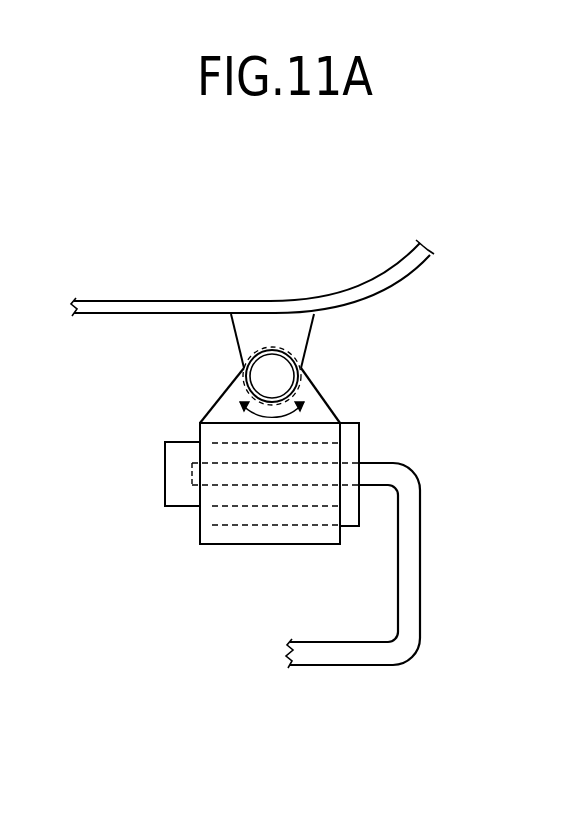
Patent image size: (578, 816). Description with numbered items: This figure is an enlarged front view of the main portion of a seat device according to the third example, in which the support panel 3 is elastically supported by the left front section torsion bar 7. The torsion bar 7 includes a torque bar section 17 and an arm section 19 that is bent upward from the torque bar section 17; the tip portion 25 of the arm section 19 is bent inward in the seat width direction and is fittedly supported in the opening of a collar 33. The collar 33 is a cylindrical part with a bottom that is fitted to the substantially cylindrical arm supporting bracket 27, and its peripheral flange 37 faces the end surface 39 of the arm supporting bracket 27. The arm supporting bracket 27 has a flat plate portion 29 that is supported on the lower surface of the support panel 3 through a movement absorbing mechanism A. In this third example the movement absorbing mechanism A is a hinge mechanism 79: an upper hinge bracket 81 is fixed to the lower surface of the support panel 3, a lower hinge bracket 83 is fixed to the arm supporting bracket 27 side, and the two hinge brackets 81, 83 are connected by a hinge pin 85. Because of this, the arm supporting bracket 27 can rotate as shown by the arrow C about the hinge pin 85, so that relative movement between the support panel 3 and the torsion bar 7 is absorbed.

The support panel 3 is at (403, 280).
The upper hinge bracket 81 is at (292, 326).
The hinge pin 85 is at (258, 377).
The arrow C is at (290, 385).
The lower hinge bracket 83 is at (330, 403).
The flat plate portion 29 is at (337, 415).
The arm supporting bracket 27 is at (240, 544).
The collar 33 is at (177, 505).
The peripheral flange 37 is at (359, 439).
The end surface 39 is at (342, 545).
The left front section torsion bar 7 is at (403, 604).
The tip portion 25 is at (383, 460).
The arm section 19 is at (422, 580).
The torque bar section 17 is at (330, 667).
The movement absorbing mechanism A is at (224, 343).
The hinge mechanism 79 is at (312, 354).